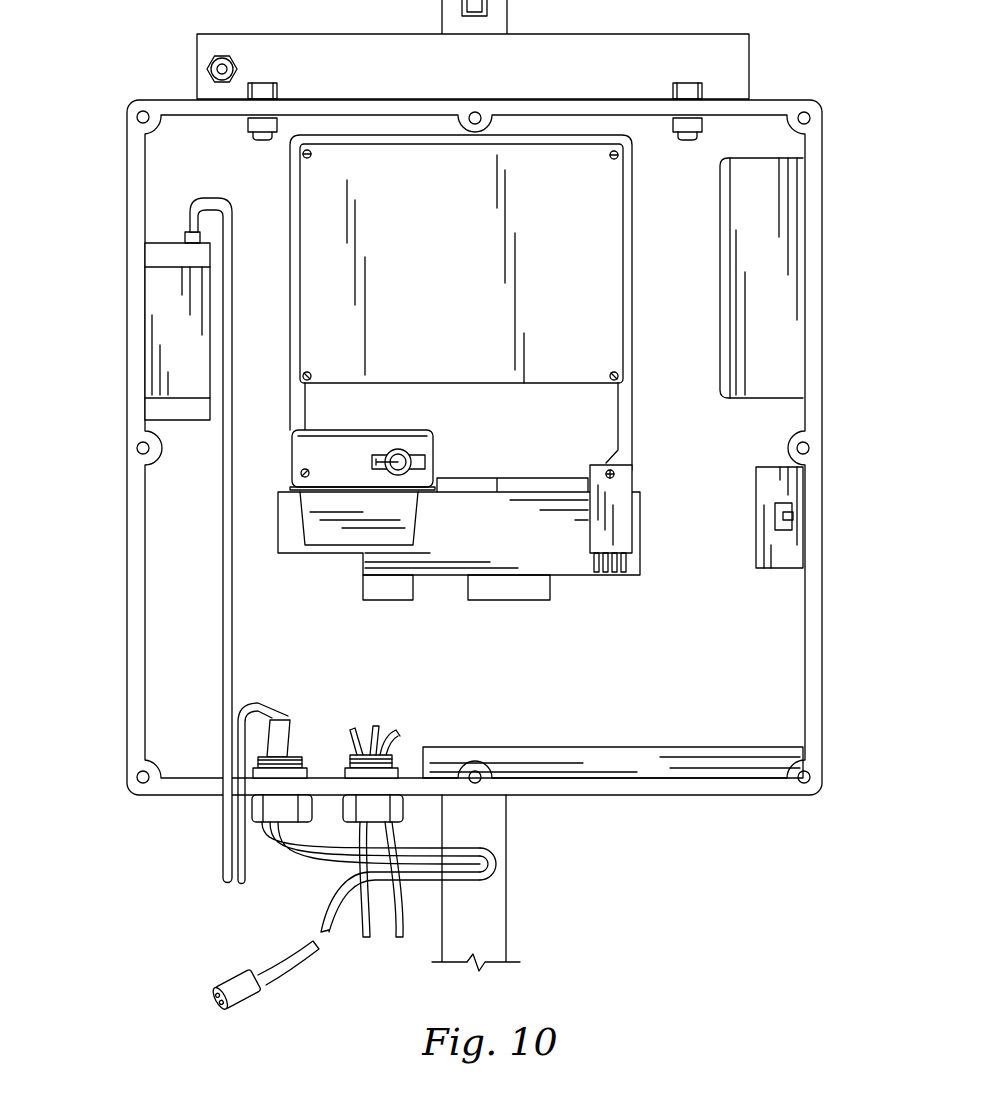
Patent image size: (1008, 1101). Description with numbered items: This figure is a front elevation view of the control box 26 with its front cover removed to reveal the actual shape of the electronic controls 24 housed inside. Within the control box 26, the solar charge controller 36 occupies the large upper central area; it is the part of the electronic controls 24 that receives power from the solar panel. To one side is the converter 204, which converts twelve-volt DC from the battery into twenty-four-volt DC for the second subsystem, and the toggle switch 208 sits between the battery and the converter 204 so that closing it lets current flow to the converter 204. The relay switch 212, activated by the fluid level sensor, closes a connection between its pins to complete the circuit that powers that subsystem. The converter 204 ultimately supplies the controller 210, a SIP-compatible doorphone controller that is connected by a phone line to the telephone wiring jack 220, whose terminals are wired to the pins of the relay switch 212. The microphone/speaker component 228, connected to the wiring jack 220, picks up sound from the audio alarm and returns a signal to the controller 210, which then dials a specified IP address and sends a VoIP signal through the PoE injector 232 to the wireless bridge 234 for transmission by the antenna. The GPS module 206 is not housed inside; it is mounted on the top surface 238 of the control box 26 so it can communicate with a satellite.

The electronic controls 24 is at (104, 803).
The control box 26 is at (830, 289).
The solar charge controller 36 is at (438, 277).
The converter 204 is at (157, 297).
The GPS module 206 is at (449, 77).
The toggle switch 208 is at (303, 458).
The controller 210 is at (573, 752).
The relay switch 212 is at (621, 487).
The telephone wiring jack 220 is at (763, 513).
The microphone/speaker component 228 is at (751, 354).
The PoE injector 232 is at (330, 535).
The wireless bridge 234 is at (468, 547).
The top surface 238 is at (779, 92).